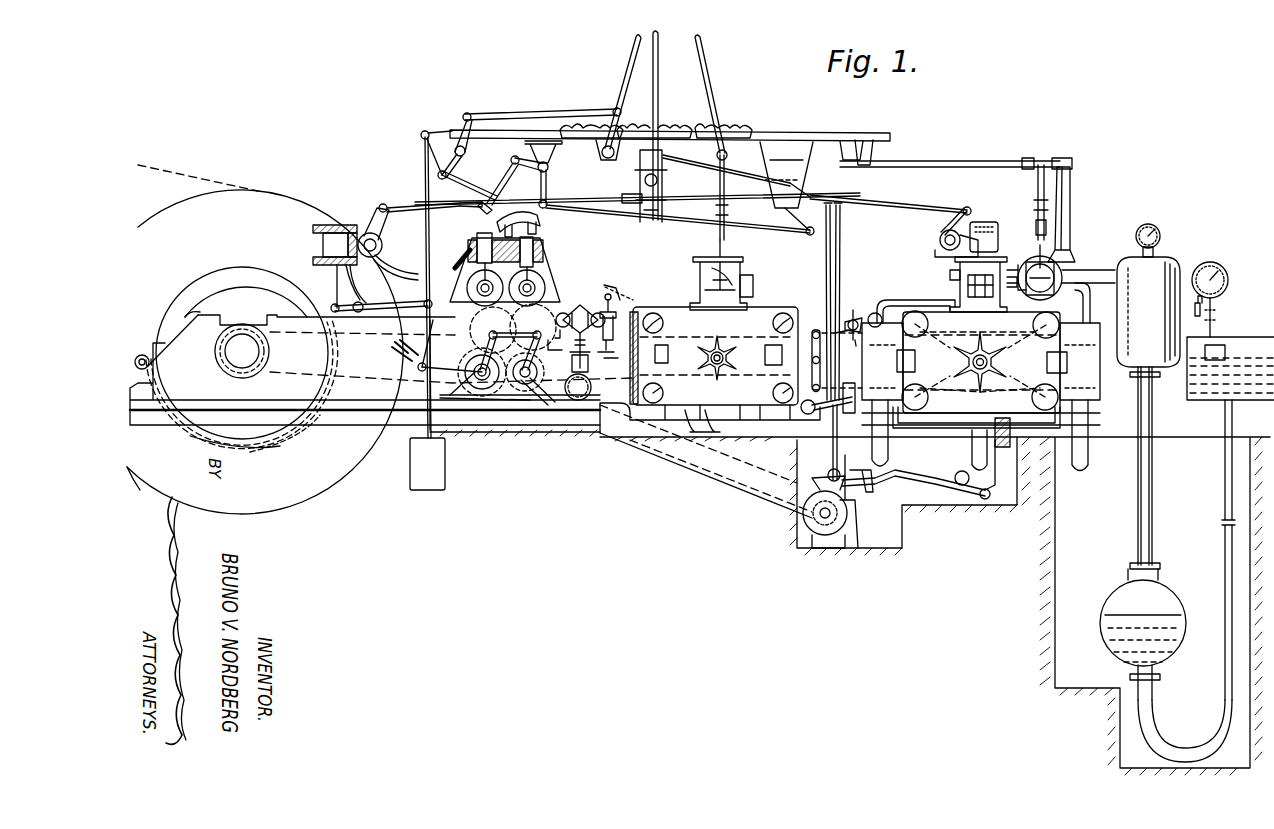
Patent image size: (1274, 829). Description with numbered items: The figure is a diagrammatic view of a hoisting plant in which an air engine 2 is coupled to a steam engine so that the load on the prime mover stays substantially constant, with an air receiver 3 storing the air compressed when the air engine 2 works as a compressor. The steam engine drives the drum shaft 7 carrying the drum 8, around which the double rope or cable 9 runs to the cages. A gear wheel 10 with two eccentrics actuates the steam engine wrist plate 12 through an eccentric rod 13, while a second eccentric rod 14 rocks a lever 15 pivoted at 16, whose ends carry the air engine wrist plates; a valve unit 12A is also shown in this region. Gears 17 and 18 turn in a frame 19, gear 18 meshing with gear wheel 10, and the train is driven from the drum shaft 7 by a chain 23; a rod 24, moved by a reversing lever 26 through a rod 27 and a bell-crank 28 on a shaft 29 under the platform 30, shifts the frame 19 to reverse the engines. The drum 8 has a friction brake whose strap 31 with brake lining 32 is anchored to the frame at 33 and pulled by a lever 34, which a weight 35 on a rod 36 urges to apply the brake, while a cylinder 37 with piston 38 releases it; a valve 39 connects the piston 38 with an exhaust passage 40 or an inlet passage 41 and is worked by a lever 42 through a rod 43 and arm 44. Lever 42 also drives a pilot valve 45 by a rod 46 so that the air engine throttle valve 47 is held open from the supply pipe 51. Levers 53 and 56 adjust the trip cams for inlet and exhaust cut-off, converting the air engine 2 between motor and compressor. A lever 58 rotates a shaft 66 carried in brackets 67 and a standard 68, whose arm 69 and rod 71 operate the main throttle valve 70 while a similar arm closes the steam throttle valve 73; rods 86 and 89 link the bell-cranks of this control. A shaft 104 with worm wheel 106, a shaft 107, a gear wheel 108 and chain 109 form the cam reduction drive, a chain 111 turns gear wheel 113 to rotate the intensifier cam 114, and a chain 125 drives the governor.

The air engine 2 is at (932, 330).
The air receiver 3 is at (1177, 262).
The drum shaft 7 is at (238, 358).
The drum 8 is at (298, 203).
The double rope or cable 9 is at (178, 175).
The gear wheel 10 is at (528, 384).
The wrist plate 12 is at (730, 353).
The valve 12A is at (582, 305).
The eccentric rod 13 is at (694, 380).
The eccentric rod 14 is at (612, 338).
The lever 15 is at (812, 345).
The pivot 16 is at (822, 360).
The gear 17 is at (470, 328).
The gear 18 is at (540, 342).
The frame 19 is at (521, 253).
The chain 23 is at (365, 380).
The rod 24 is at (436, 246).
The lever 26 is at (620, 70).
The rod 27 is at (551, 112).
The bell-crank 28 is at (430, 132).
The shaft 29 is at (466, 151).
The platform 30 is at (812, 130).
The strap 31 is at (280, 446).
The brake lining 32 is at (296, 432).
The anchorage 33 is at (142, 355).
The lever 34 is at (405, 302).
The weight 35 is at (432, 490).
The rod 36 is at (432, 425).
The cylinder 37 is at (337, 224).
The piston 38 is at (325, 244).
The valve 39 is at (382, 243).
The exhaust passage 40 is at (380, 207).
The inlet passage 41 is at (400, 265).
The lever 42 is at (715, 100).
The rod 43 is at (418, 203).
The arm 44 is at (393, 212).
The pilot valve 45 is at (940, 238).
The rod 46 is at (905, 203).
The throttle valve 47 is at (960, 272).
The steam or air supply pipe 51 is at (948, 222).
The lever 53 is at (862, 315).
The lever 56 is at (832, 432).
The lever 58 is at (662, 96).
The shaft 66 is at (958, 160).
The brackets 67 is at (738, 181).
The standard 68 is at (1070, 188).
The arm 69 is at (1028, 158).
The main throttle valve 70 is at (1062, 270).
The rod 71 is at (1034, 194).
The throttle valve 73 is at (698, 283).
The rod 86 is at (690, 222).
The rod 89 is at (588, 196).
The shaft 104 is at (420, 330).
The worm wheel 106 is at (396, 352).
The shaft 107 is at (418, 369).
The gear wheel 108 is at (420, 375).
The chain 109 is at (478, 385).
The chain 111 is at (648, 448).
The gear wheel 113 is at (806, 536).
The cam 114 is at (804, 518).
The chain 125 is at (550, 394).